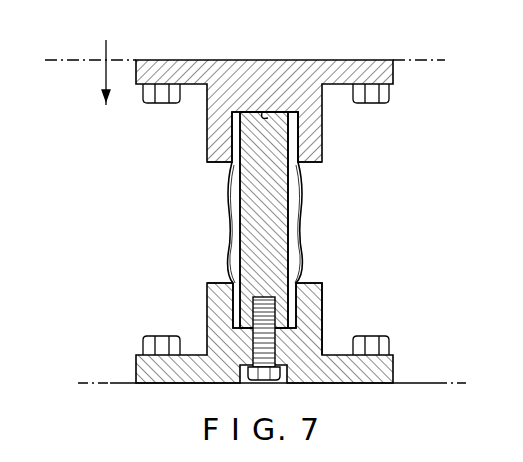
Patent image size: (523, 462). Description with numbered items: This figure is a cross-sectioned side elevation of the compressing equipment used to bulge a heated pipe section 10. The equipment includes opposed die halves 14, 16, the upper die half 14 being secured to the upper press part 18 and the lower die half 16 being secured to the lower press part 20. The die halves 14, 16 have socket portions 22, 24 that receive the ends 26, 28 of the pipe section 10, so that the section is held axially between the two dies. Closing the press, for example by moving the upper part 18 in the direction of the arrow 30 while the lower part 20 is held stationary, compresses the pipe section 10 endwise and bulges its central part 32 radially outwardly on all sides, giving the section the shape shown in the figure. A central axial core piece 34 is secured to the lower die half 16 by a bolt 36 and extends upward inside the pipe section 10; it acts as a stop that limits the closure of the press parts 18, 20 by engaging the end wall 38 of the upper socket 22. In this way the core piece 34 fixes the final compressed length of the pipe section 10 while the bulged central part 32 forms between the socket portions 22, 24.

The pipe section 10 is at (279, 178).
The upper die half 14 is at (321, 111).
The lower die half 16 is at (324, 333).
The upper press part 18 is at (405, 62).
The lower press part 20 is at (408, 383).
The socket portion 22 is at (232, 143).
The socket portion 24 is at (236, 298).
The pipe section end 26 is at (297, 142).
The pipe section end 28 is at (324, 294).
The arrow 30 is at (104, 80).
The central part 32 is at (304, 194).
The central axial core piece 34 is at (257, 229).
The bolt 36 is at (263, 381).
The end wall of socket 38 is at (262, 113).